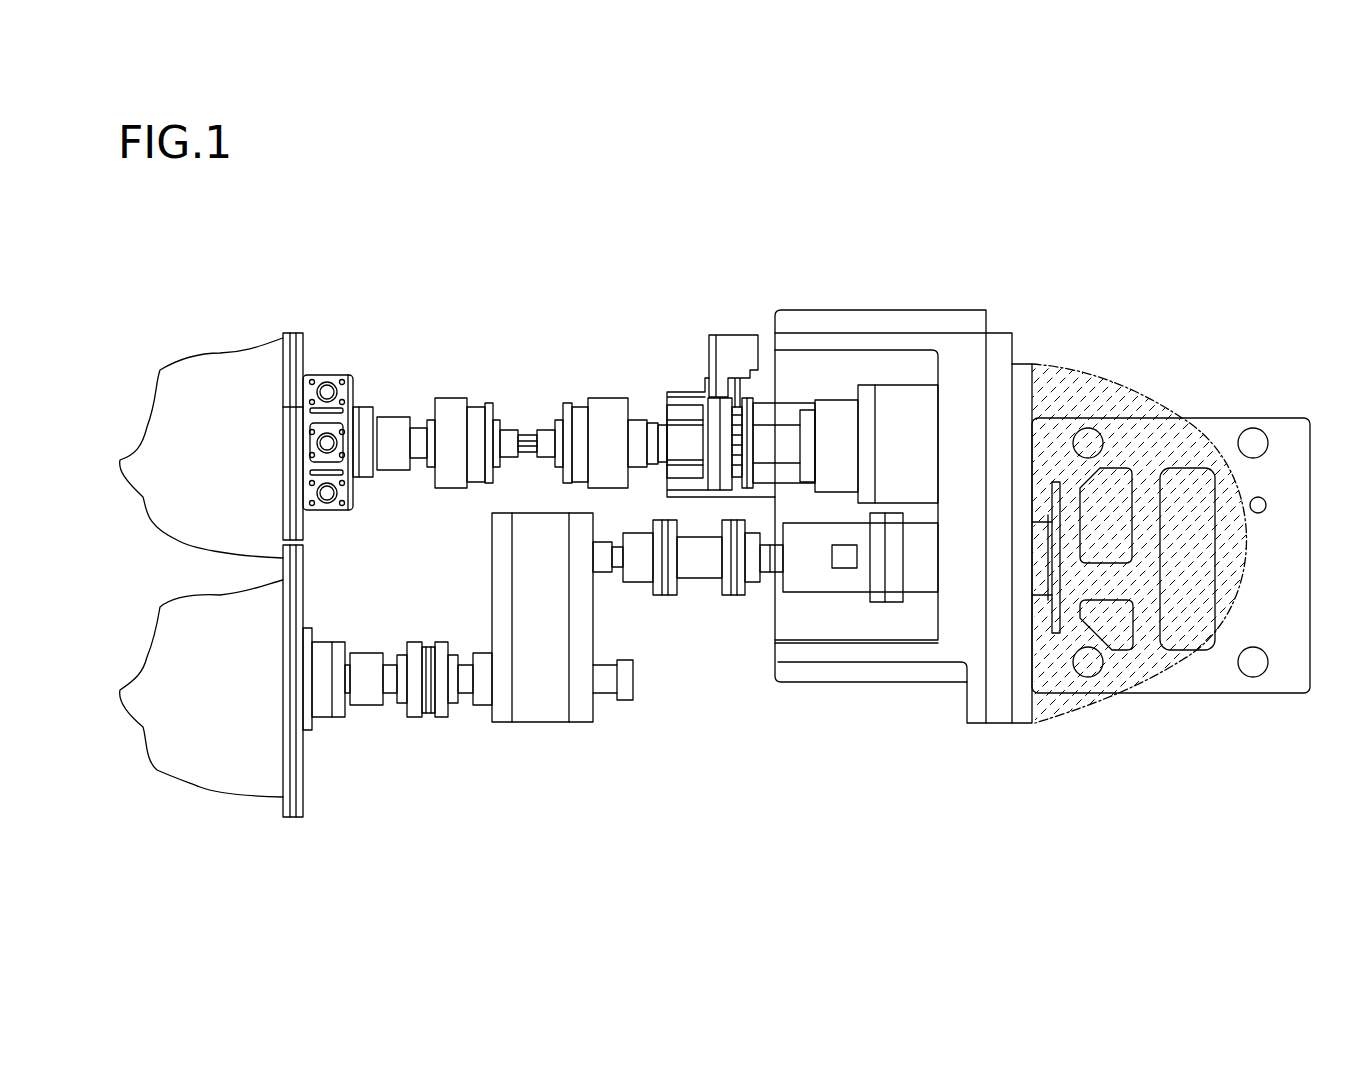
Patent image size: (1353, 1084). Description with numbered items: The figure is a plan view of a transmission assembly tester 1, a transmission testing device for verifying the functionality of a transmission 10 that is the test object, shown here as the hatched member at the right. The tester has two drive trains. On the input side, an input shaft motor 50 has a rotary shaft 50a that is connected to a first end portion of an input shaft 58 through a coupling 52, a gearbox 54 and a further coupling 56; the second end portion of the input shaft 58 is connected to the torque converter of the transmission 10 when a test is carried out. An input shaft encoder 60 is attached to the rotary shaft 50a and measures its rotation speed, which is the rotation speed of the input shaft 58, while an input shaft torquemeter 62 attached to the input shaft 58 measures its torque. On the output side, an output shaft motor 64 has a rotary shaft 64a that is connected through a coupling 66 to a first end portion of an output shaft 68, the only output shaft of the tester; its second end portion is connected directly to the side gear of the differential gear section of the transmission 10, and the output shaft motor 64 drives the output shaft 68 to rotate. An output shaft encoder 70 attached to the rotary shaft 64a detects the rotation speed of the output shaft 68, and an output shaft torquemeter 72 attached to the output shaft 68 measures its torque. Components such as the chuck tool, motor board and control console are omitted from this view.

The transmission assembly tester 1 is at (1070, 284).
The transmission 10 is at (1077, 700).
The input shaft motor 50 is at (230, 780).
The rotary shaft 50a is at (342, 683).
The coupling 52 is at (425, 713).
The gearbox 54 is at (537, 705).
The coupling 56 is at (693, 572).
The input shaft 58 is at (770, 562).
The input shaft encoder 60 is at (365, 685).
The input shaft torquemeter 62 is at (818, 580).
The output shaft motor 64 is at (217, 368).
The rotary shaft 64a is at (367, 407).
The coupling 66 is at (523, 432).
The output shaft 68 is at (783, 445).
The output shaft encoder 70 is at (395, 428).
The output shaft torquemeter 72 is at (730, 448).